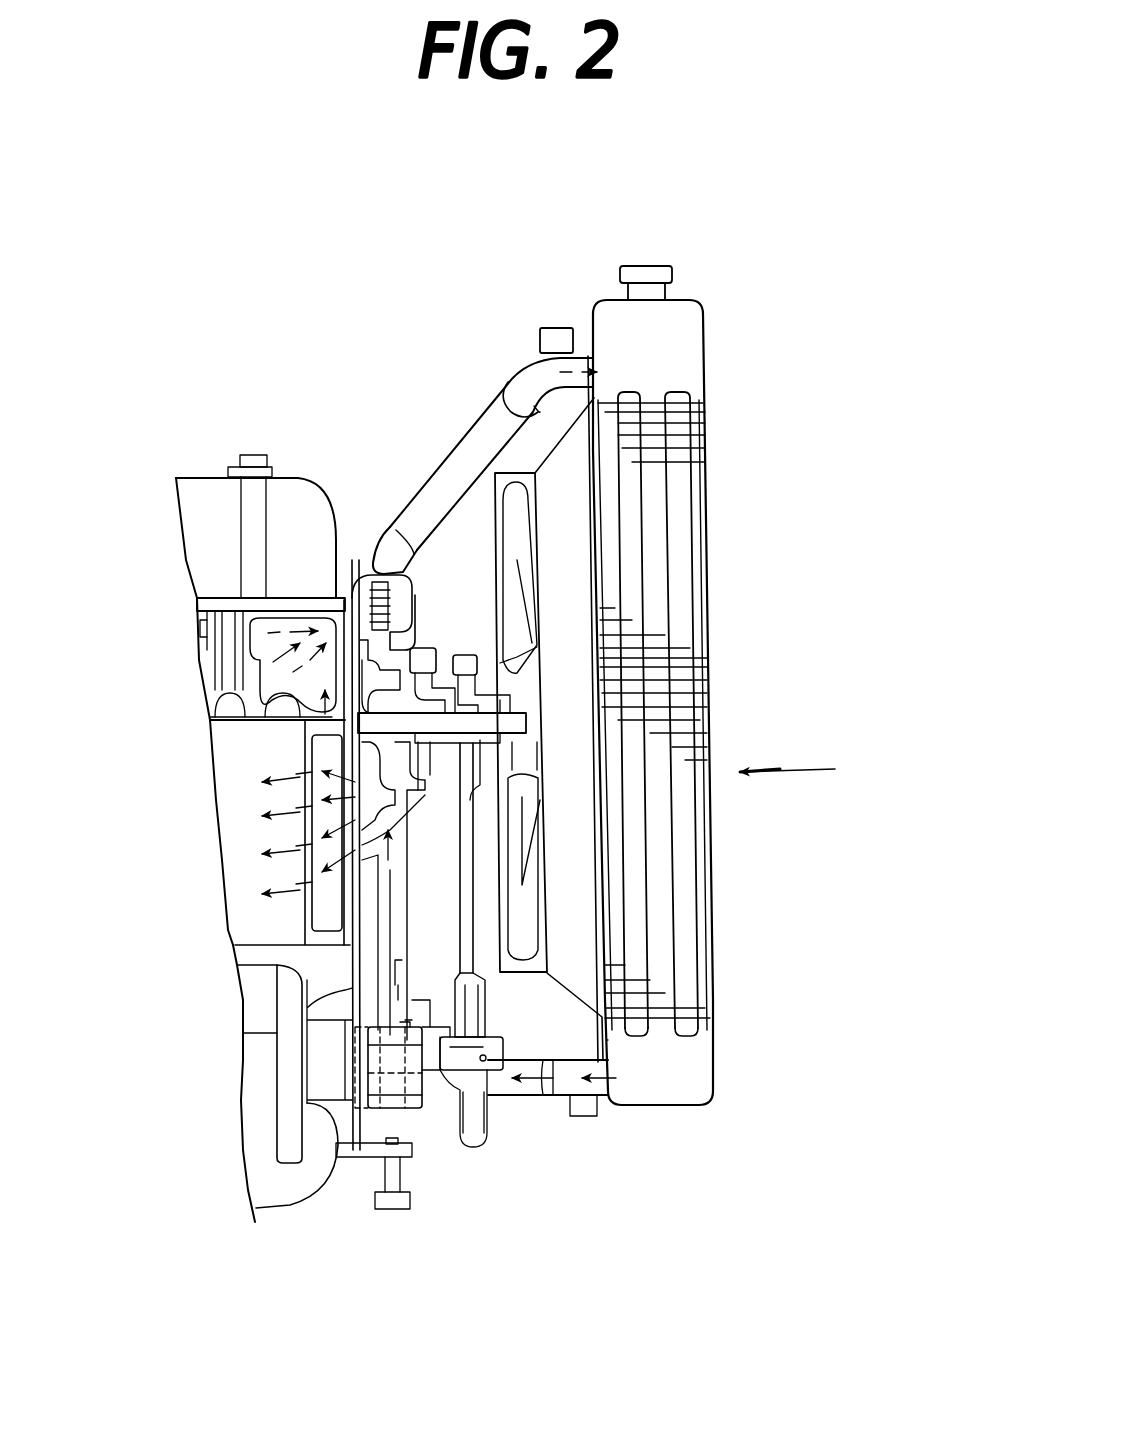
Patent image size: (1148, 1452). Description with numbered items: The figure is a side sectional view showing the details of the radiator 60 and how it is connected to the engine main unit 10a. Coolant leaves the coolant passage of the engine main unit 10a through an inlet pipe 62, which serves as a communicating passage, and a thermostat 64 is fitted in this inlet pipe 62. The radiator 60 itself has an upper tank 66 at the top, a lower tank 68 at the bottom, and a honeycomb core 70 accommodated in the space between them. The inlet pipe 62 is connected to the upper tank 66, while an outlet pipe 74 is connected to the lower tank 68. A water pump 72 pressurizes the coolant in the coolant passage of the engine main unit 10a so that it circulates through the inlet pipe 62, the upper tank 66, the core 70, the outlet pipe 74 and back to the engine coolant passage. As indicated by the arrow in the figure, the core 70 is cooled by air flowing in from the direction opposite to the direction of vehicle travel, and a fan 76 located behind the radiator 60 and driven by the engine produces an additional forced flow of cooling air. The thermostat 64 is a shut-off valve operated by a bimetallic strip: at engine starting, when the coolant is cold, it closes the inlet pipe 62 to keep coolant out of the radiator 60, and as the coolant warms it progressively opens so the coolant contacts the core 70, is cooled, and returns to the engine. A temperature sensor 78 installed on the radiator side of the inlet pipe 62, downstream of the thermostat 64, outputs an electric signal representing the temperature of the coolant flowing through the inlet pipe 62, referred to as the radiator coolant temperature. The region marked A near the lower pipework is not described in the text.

The engine main unit 10a is at (198, 470).
The radiator 60 is at (697, 270).
The inlet pipe 62 is at (462, 420).
The thermostat 64 is at (357, 560).
The upper tank 66 is at (695, 340).
The lower tank 68 is at (712, 1040).
The honeycomb core 70 is at (710, 690).
The water pump 72 is at (428, 755).
The outlet pipe 74 is at (527, 1097).
The fan 76 is at (540, 547).
The temperature sensor 78 is at (553, 328).
The water pump A is at (413, 1113).